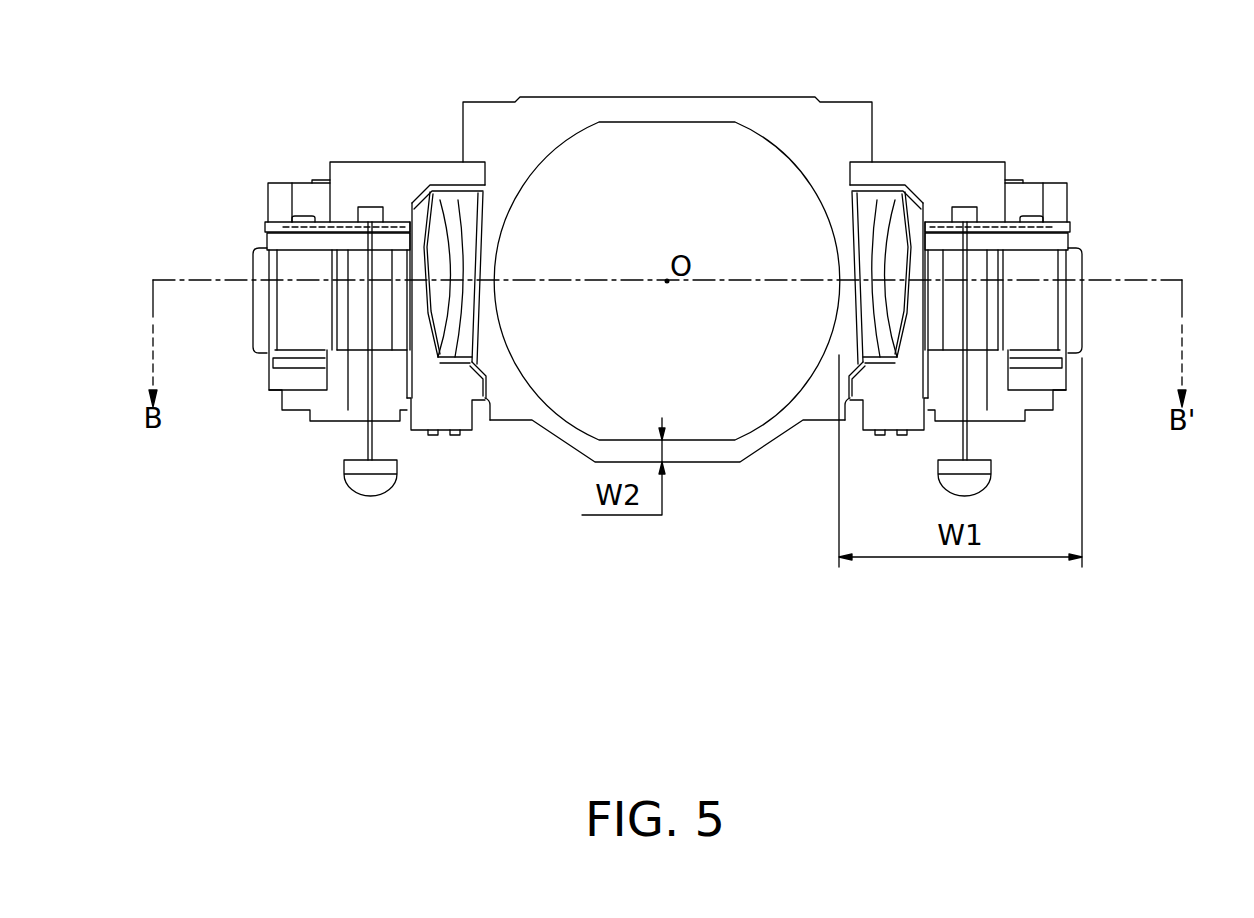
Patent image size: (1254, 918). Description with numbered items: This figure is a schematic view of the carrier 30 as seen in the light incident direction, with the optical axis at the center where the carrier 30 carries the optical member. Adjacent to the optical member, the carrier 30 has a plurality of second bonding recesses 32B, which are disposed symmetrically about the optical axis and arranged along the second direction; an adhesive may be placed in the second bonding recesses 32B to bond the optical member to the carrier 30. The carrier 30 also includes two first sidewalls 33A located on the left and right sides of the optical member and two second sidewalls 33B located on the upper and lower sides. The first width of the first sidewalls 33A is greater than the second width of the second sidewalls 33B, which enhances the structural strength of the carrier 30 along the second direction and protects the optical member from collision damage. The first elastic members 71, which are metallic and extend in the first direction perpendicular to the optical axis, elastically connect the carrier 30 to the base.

The carrier 30 is at (762, 130).
The second bonding recesses 32B is at (443, 320).
The first sidewalls 33A is at (1084, 265).
The second sidewalls 33B is at (722, 458).
The first elastic members 71 is at (968, 437).